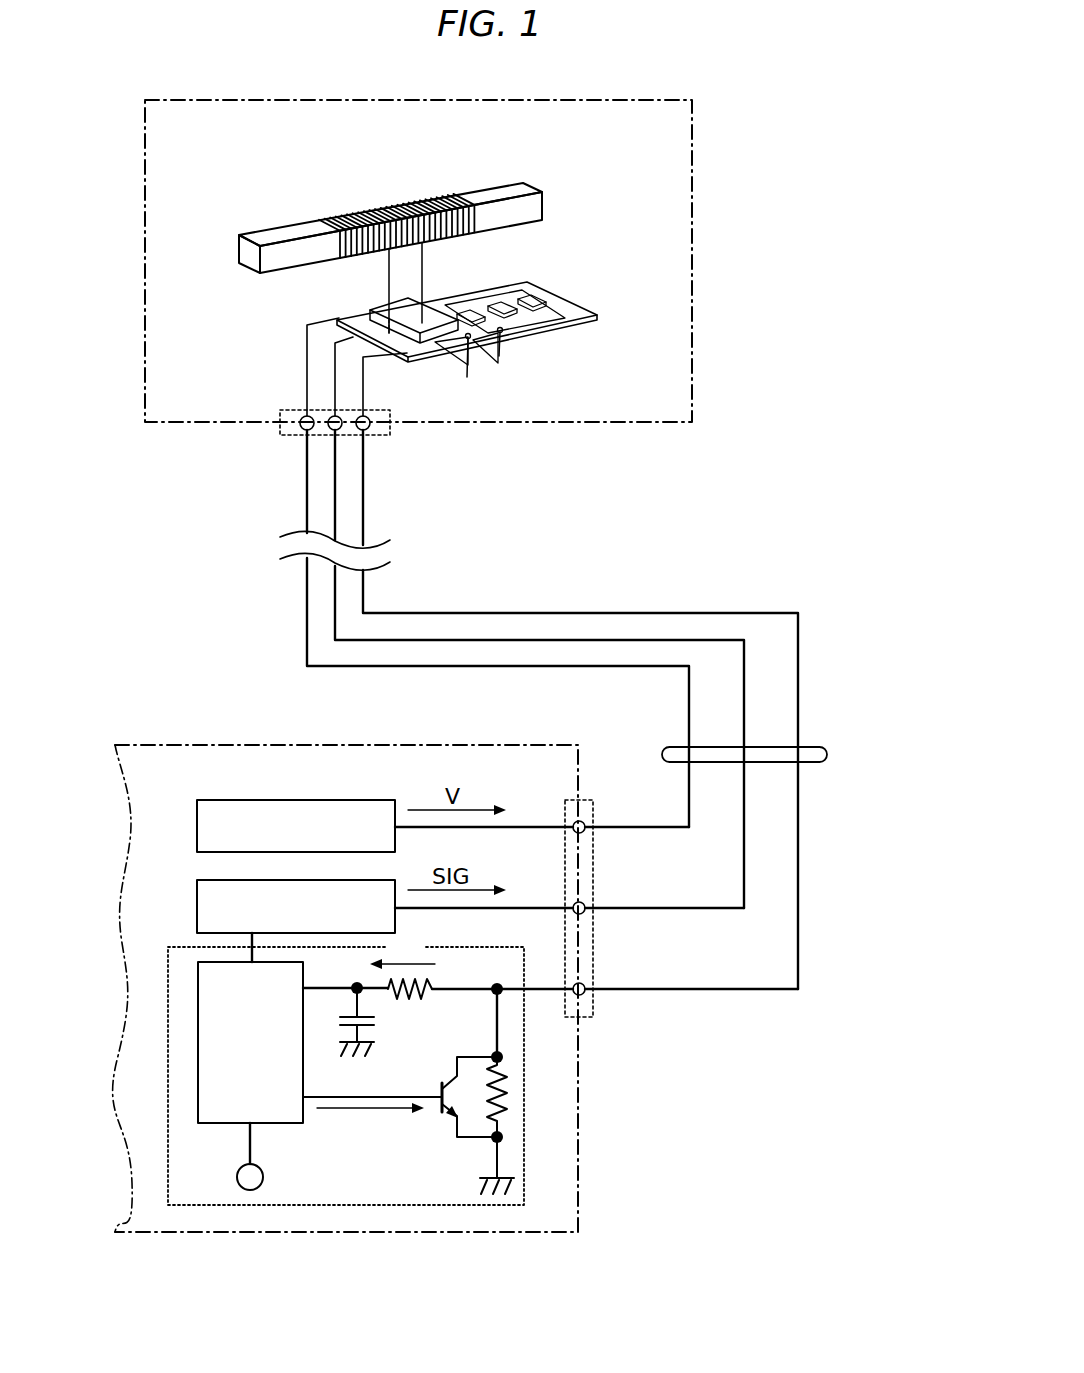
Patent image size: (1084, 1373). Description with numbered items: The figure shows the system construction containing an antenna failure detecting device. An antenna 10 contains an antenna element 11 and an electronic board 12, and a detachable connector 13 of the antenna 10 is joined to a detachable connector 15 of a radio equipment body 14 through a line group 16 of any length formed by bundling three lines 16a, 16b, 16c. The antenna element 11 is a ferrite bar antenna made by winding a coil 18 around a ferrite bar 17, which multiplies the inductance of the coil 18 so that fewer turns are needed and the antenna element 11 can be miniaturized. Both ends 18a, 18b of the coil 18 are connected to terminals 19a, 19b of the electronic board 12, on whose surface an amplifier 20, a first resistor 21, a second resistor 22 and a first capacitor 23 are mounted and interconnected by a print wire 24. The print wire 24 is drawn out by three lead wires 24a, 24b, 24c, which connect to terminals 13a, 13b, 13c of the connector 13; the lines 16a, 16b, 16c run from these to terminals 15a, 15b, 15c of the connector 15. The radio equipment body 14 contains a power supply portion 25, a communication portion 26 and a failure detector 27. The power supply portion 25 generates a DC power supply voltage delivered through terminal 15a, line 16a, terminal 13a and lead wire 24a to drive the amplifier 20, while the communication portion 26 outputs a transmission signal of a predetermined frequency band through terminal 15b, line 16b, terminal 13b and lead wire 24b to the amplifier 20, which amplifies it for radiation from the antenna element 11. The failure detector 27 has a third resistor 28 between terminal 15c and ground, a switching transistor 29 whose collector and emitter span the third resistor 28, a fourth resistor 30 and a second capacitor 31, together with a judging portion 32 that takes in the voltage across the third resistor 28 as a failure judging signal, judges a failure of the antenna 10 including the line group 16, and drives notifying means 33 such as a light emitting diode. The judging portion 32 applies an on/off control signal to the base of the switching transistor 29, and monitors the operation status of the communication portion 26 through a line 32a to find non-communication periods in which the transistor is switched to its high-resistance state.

The antenna 10 is at (692, 200).
The antenna element 11 is at (278, 206).
The electronic board 12 is at (608, 314).
The detachable connector 13 is at (282, 434).
The terminal 13a is at (305, 432).
The terminal 13b is at (333, 432).
The terminal 13c is at (363, 433).
The radio equipment body 14 is at (578, 1108).
The detachable connector 15 is at (593, 1010).
The terminal 15a is at (587, 823).
The terminal 15b is at (587, 905).
The terminal 15c is at (587, 987).
The line group 16 is at (808, 762).
The line 16a is at (689, 703).
The line 16b is at (744, 708).
The line 16c is at (798, 640).
The ferrite bar 17 is at (250, 255).
The coil 18 is at (466, 192).
The end of coil 18a is at (480, 362).
The end of coil 18b is at (502, 352).
The terminal 19a is at (470, 350).
The terminal 19b is at (520, 337).
The amplifier 20 is at (382, 307).
The first resistor 21 is at (460, 310).
The second resistor 22 is at (520, 302).
The first capacitor 23 is at (548, 300).
The print wire 24 is at (476, 300).
The lead wire 24a is at (306, 342).
The lead wire 24b is at (334, 375).
The lead wire 24c is at (365, 366).
The power supply portion 25 is at (238, 800).
The communication portion 26 is at (202, 884).
The failure detector 27 is at (385, 1206).
The third resistor 28 is at (507, 1090).
The switching transistor 29 is at (453, 1079).
The fourth resistor 30 is at (430, 992).
The second capacitor 31 is at (342, 1037).
The judging portion 32 is at (270, 1127).
The line 32a is at (252, 948).
The notifying means 33 is at (238, 1172).